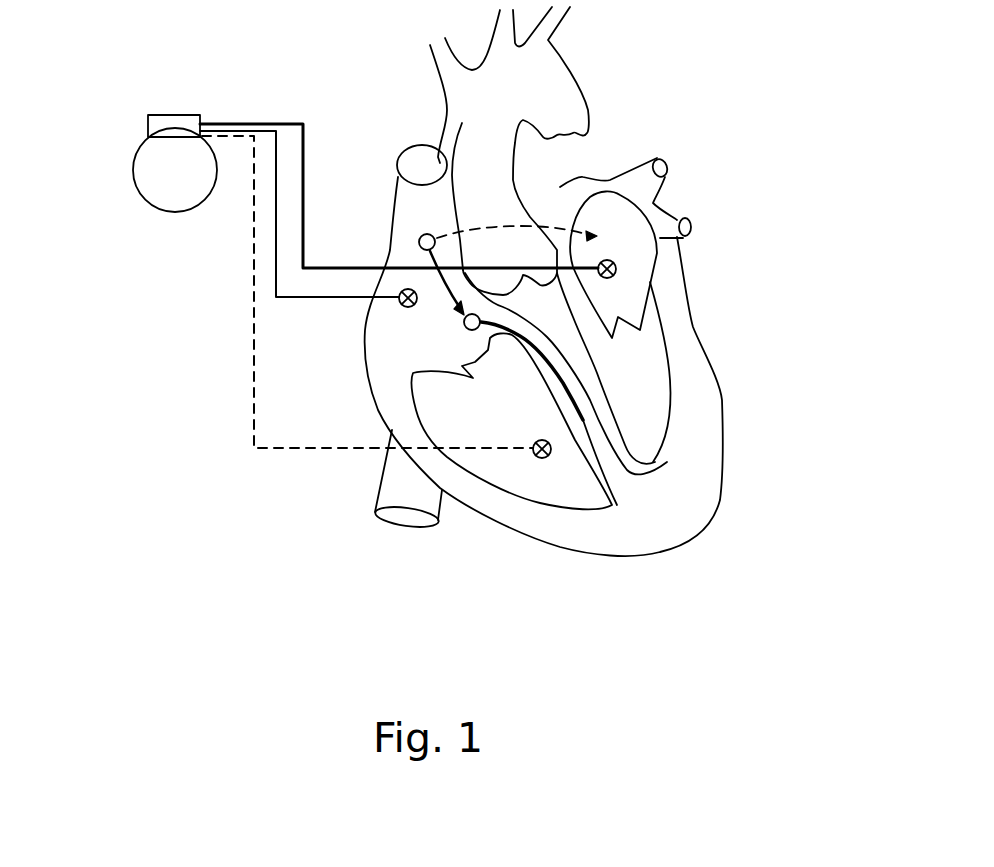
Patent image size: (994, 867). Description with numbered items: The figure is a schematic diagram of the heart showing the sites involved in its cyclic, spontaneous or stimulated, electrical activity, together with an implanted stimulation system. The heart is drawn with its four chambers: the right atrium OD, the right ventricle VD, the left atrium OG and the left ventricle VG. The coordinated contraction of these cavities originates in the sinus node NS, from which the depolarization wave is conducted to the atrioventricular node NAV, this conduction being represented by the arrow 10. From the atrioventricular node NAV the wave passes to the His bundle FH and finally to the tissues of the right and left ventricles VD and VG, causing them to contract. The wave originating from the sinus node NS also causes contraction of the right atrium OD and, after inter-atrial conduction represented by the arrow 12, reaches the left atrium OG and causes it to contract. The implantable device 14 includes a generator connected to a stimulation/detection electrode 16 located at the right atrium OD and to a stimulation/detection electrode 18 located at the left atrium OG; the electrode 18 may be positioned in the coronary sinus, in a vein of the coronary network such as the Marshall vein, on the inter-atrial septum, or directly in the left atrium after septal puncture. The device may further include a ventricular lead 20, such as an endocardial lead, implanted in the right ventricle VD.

The arrow 10 is at (460, 307).
The arrow 12 is at (533, 210).
The implantable device 14 is at (152, 171).
The stimulation/detection electrode 16 is at (403, 305).
The stimulation/detection electrode 18 is at (610, 257).
The ventricular lead 20 is at (546, 460).
The sinus node NS is at (420, 237).
The atrioventricular node NAV is at (470, 331).
The right atrium OD is at (417, 345).
The left atrium OG is at (638, 262).
The right ventricle VD is at (517, 477).
The left ventricle VG is at (647, 373).
The His bundle FH is at (640, 477).